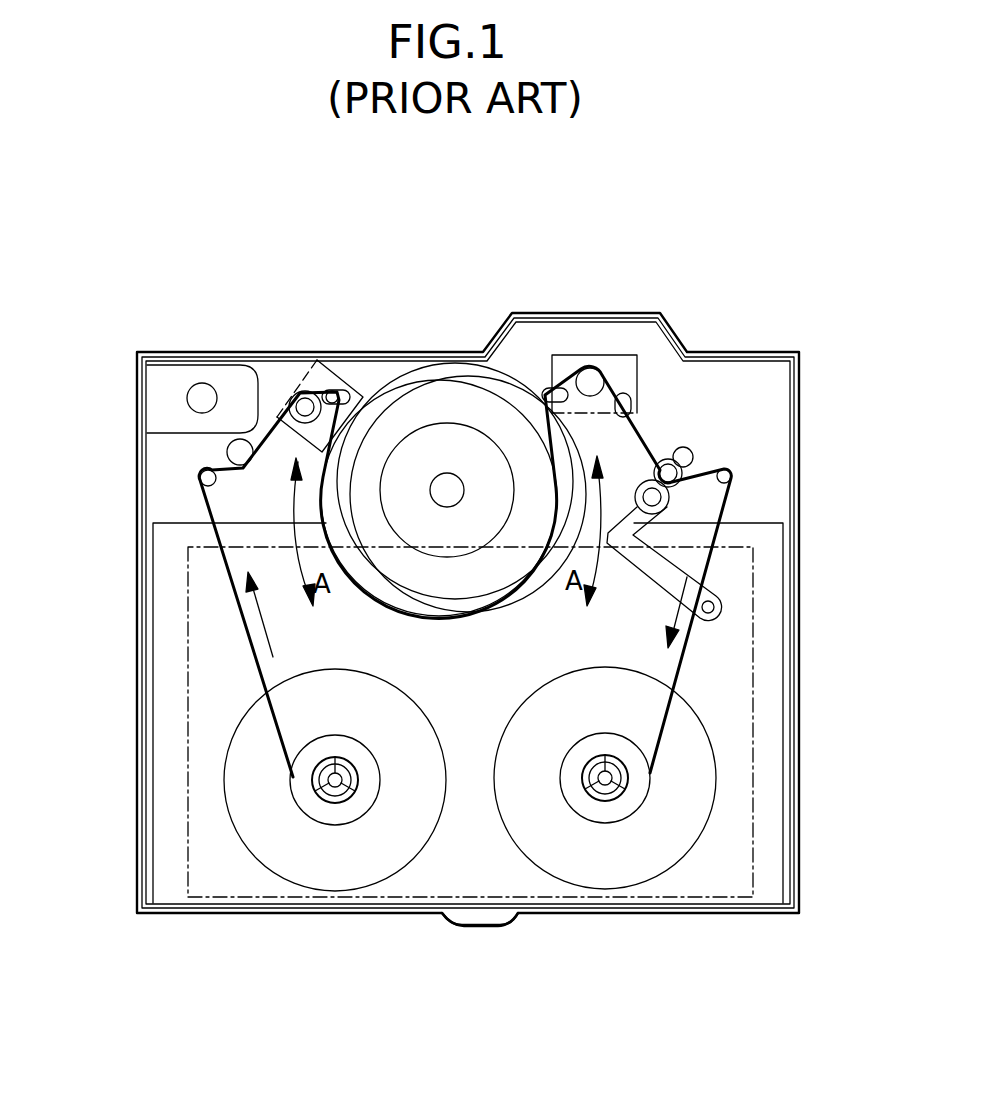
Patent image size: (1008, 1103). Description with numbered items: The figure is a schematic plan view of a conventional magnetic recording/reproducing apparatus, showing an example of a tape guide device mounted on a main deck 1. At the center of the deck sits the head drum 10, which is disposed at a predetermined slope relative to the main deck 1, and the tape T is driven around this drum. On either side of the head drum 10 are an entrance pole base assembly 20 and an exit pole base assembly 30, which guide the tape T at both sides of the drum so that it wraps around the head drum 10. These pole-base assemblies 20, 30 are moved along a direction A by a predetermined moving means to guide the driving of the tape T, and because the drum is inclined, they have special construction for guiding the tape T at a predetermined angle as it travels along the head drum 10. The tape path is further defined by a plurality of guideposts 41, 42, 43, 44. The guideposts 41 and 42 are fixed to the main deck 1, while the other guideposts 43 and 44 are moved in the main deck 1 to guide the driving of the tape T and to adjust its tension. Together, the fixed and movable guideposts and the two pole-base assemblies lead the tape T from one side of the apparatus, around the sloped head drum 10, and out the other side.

The main deck 1 is at (756, 348).
The head drum 10 is at (435, 397).
The entrance pole base assembly 20 is at (291, 378).
The exit pole base assembly 30 is at (588, 345).
The guidepost 41 is at (204, 481).
The guidepost 42 is at (230, 449).
The guidepost 43 is at (692, 446).
The guidepost 44 is at (721, 468).
The tape T is at (681, 621).